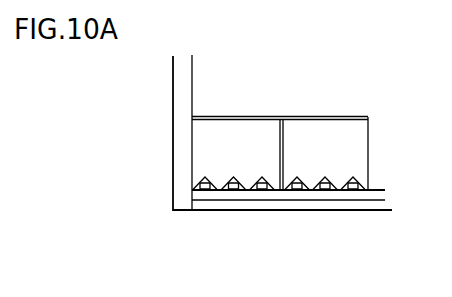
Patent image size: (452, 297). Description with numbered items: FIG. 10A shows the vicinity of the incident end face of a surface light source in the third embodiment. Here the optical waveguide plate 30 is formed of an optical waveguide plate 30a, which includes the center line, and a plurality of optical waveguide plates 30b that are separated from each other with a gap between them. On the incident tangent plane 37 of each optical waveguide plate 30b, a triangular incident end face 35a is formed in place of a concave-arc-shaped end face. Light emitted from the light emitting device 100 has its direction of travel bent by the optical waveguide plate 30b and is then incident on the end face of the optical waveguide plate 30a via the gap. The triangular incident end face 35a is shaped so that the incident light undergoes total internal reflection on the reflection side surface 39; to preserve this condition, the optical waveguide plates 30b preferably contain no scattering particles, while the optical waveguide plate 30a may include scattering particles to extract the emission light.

The optical waveguide plate 30 is at (88, 95).
The optical waveguide plate 30a is at (217, 97).
The optical waveguide plate 30b is at (217, 128).
The triangular incident end face 35a is at (323, 182).
The incident tangent plane 37 is at (377, 190).
The reflection side surface 39 is at (192, 170).
The light emitting device 100 is at (206, 190).